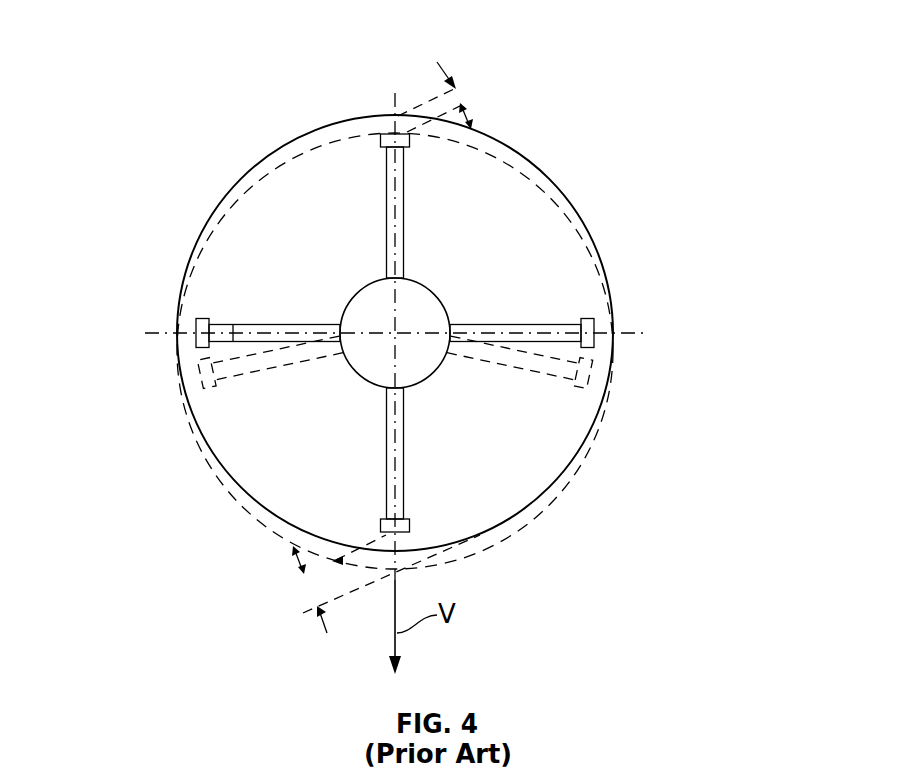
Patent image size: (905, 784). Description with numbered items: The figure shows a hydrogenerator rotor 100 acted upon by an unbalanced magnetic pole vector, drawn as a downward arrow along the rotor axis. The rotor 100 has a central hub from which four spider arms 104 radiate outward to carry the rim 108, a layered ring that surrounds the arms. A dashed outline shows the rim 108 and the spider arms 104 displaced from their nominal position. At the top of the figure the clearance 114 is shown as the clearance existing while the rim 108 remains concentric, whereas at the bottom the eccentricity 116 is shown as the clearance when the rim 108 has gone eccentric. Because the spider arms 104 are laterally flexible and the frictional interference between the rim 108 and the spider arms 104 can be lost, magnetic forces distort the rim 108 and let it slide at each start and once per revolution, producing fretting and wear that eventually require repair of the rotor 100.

The rotor 100 is at (130, 49).
The spider arms 104 is at (516, 352).
The rim 108 is at (568, 200).
The clearance 114 is at (471, 126).
The eccentricity 116 is at (294, 548).